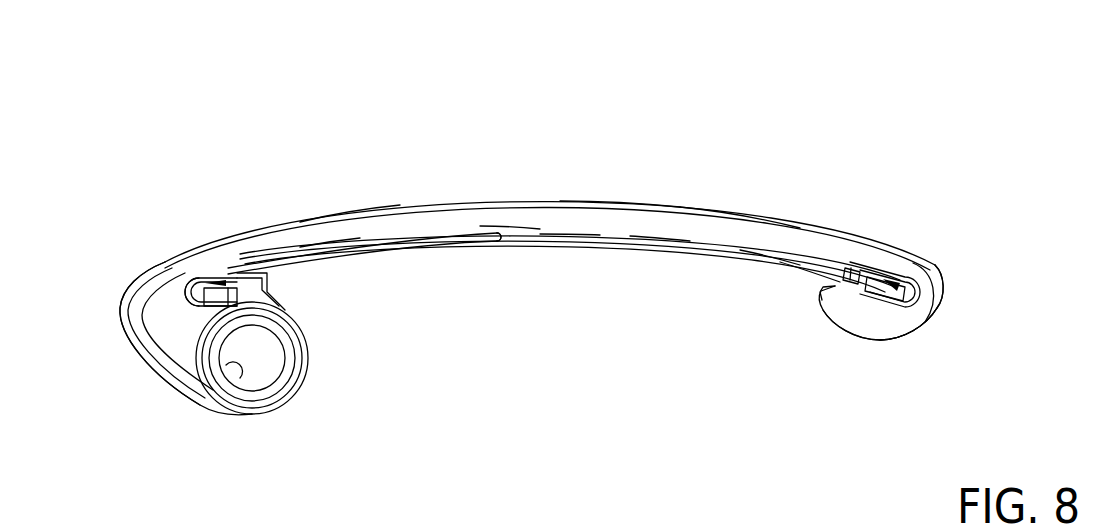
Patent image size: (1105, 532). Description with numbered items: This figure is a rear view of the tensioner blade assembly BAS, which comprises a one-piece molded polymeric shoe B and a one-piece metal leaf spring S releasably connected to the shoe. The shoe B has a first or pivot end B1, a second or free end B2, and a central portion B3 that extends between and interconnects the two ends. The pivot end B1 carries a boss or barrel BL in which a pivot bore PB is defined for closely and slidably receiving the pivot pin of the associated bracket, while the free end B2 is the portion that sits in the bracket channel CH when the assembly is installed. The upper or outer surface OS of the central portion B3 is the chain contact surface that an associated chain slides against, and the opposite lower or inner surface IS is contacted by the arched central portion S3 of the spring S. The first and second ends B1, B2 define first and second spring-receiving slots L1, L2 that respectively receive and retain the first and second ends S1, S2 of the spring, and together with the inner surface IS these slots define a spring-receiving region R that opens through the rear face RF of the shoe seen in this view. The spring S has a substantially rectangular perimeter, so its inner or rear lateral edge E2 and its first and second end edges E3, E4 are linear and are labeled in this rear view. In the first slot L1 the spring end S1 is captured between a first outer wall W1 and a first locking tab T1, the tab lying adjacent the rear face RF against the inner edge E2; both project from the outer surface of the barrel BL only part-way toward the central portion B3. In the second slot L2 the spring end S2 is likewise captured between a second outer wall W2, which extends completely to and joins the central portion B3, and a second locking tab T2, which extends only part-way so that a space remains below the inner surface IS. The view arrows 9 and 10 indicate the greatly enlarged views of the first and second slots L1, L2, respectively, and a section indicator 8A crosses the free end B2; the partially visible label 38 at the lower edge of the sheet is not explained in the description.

The tensioner blade assembly BAS is at (374, 122).
The shoe B is at (318, 232).
The first or pivot end B1 is at (142, 325).
The second or free end B2 is at (925, 297).
The central portion B3 is at (582, 202).
The outer surface OS is at (697, 210).
The inner surface IS is at (783, 260).
The spring S is at (658, 245).
The first end of the spring S1 is at (340, 255).
The second end of the spring S2 is at (805, 262).
The arched central portion of the spring S3 is at (577, 242).
The spring-receiving region R is at (509, 278).
The rear face RF is at (443, 240).
The inner lateral edge E2 is at (500, 232).
The first end edge E3 is at (174, 296).
The second end edge E4 is at (928, 327).
The first outer wall W1 is at (195, 283).
The second outer wall W2 is at (860, 268).
The first spring-receiving slot L1 is at (240, 283).
The second spring-receiving slot L2 is at (872, 277).
The first locking tab T1 is at (292, 275).
The second locking tab T2 is at (843, 318).
The pivot bore PB is at (238, 378).
The boss or barrel BL is at (278, 410).
The channel CH is at (211, 526).
The component 38 is at (281, 526).
The detail view arrow 9 is at (390, 354).
The detail view arrow 10 is at (677, 355).
The section 8A is at (808, 457).